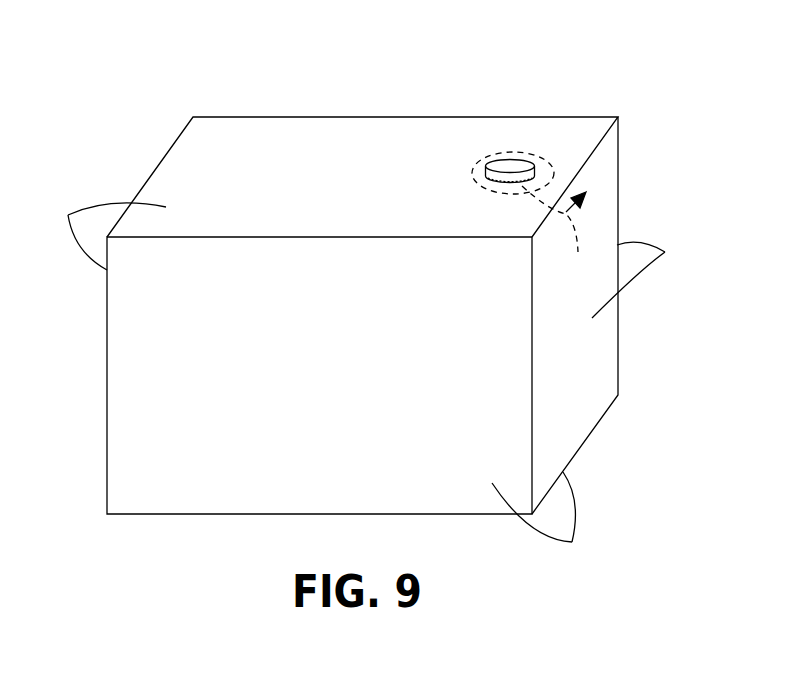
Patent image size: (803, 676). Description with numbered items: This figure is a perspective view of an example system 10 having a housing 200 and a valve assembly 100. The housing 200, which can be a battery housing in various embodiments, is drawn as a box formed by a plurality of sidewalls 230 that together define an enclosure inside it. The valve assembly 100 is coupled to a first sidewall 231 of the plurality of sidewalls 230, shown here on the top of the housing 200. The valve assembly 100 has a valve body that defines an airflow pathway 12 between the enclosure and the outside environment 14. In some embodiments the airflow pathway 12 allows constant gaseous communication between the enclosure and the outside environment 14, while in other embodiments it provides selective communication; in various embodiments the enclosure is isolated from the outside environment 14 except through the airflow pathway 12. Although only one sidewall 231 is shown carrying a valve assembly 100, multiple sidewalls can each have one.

The system 10 is at (198, 88).
The airflow pathway 12 is at (555, 231).
The outside environment 14 is at (580, 62).
The valve assembly 100 is at (477, 152).
The housing 200 is at (370, 305).
The sidewalls 230 is at (370, 385).
The first sidewall 231 is at (345, 136).